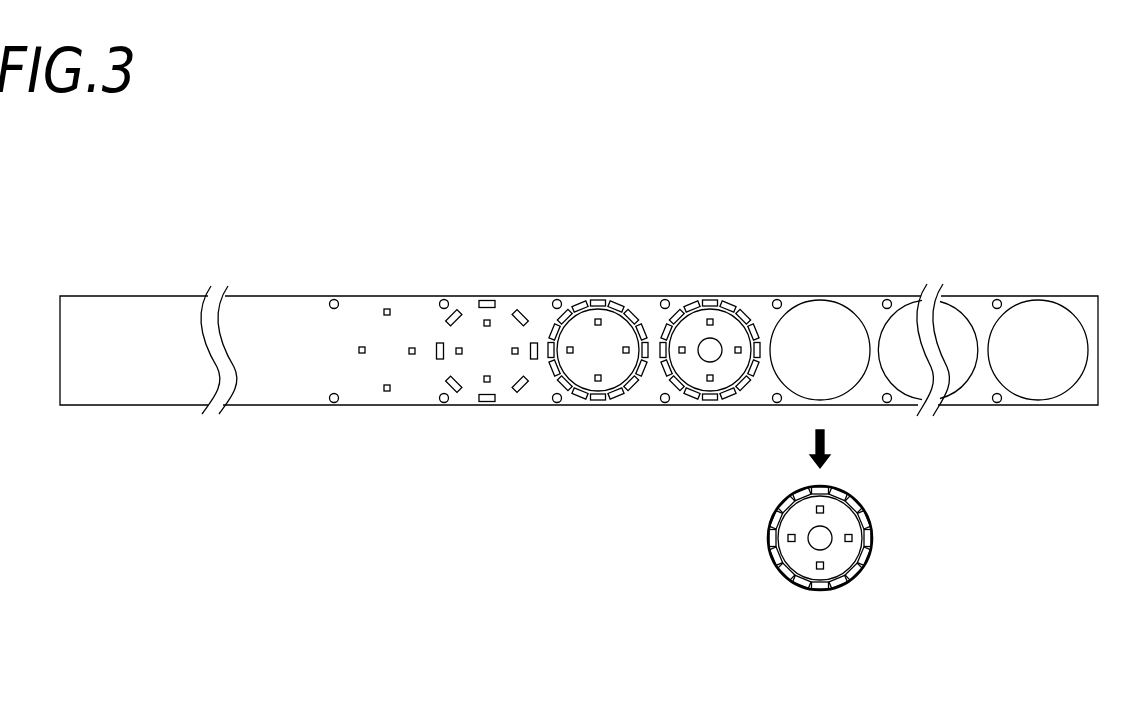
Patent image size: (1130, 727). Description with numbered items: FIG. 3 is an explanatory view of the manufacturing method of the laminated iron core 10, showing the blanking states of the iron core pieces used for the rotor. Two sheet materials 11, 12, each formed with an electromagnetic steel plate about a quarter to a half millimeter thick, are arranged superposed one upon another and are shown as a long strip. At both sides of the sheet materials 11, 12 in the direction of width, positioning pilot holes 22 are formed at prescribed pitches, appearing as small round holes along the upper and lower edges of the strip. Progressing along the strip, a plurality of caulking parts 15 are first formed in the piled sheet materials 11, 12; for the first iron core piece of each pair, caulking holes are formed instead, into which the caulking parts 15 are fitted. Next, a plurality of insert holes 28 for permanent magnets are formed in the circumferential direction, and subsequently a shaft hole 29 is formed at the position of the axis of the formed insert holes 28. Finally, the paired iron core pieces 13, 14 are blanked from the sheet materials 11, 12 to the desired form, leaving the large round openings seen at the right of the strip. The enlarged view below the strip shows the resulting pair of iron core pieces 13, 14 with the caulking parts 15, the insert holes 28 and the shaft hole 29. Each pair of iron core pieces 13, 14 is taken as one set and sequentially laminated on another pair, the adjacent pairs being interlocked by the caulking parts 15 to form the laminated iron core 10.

The laminated iron core 10 is at (777, 456).
The sheet material 11 is at (579, 311).
The sheet material 12 is at (155, 295).
The iron core piece 13 is at (883, 545).
The iron core piece 14 is at (860, 573).
The caulking part 15 is at (412, 347).
The positioning pilot hole 22 is at (334, 299).
The insert hole 28 is at (517, 312).
The shaft hole 29 is at (703, 340).